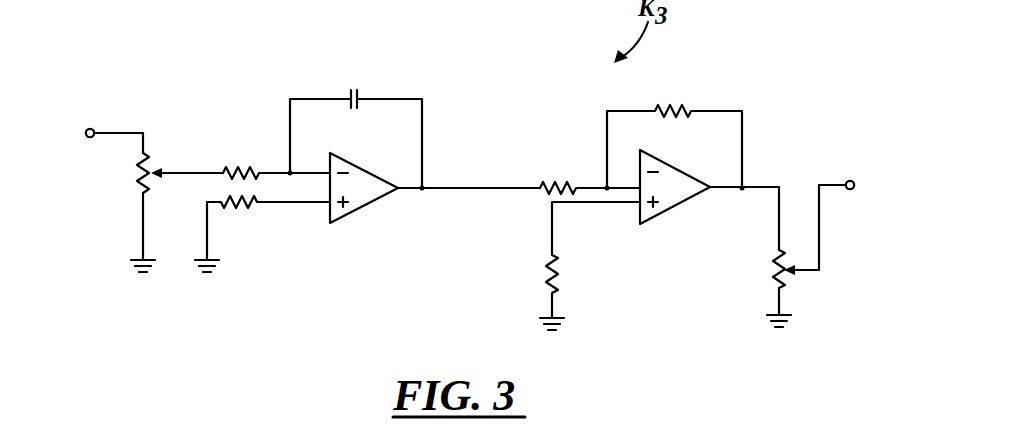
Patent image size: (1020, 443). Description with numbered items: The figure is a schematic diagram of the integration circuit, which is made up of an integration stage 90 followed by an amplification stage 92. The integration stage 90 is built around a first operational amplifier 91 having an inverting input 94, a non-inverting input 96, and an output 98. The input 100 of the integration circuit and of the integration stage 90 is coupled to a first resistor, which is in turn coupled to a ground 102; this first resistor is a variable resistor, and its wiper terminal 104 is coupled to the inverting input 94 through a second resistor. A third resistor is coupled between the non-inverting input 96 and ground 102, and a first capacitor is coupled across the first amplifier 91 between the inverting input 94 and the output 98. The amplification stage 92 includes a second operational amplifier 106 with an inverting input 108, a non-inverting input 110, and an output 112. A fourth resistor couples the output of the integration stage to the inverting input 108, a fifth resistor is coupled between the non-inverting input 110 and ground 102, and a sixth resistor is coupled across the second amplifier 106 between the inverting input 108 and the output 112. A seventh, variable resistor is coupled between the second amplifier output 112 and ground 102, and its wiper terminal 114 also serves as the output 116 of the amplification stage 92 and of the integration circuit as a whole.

The integration stage 90 is at (373, 205).
The first operational amplifier 91 is at (357, 169).
The amplification stage 92 is at (698, 232).
The inverting input 94 is at (328, 172).
The non-inverting input 96 is at (328, 205).
The output 98 is at (400, 190).
The input 100 is at (93, 129).
The ground 102 is at (141, 258).
The wiper terminal 104 is at (158, 172).
The second operational amplifier 106 is at (688, 172).
The inverting input 108 is at (637, 185).
The non-inverting input 110 is at (641, 206).
The output 112 is at (713, 192).
The wiper terminal 114 is at (793, 265).
The output 116 is at (855, 190).